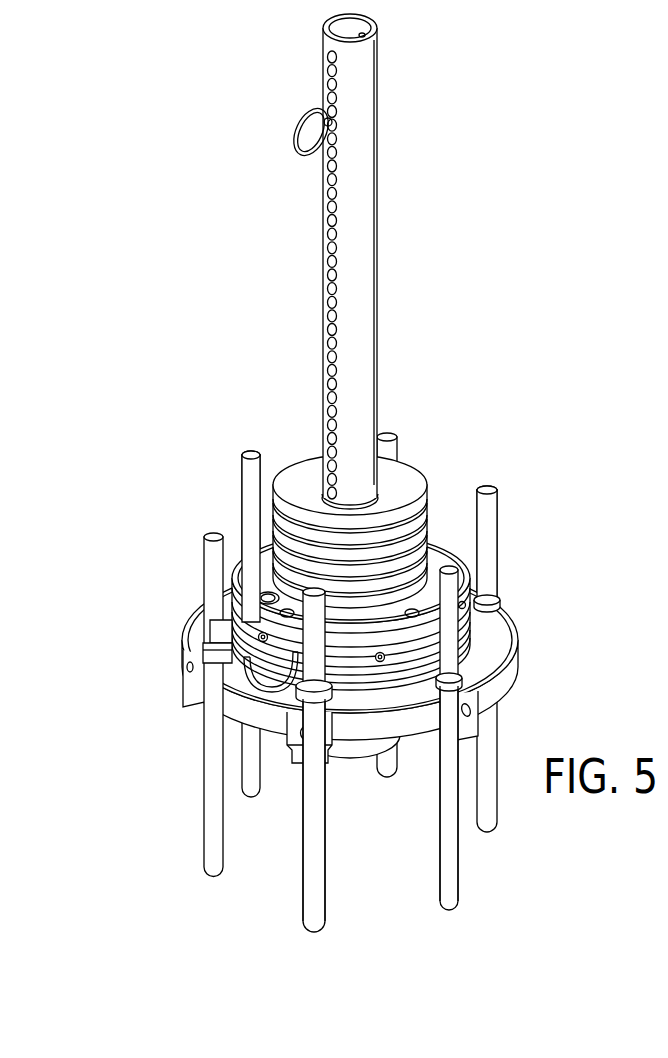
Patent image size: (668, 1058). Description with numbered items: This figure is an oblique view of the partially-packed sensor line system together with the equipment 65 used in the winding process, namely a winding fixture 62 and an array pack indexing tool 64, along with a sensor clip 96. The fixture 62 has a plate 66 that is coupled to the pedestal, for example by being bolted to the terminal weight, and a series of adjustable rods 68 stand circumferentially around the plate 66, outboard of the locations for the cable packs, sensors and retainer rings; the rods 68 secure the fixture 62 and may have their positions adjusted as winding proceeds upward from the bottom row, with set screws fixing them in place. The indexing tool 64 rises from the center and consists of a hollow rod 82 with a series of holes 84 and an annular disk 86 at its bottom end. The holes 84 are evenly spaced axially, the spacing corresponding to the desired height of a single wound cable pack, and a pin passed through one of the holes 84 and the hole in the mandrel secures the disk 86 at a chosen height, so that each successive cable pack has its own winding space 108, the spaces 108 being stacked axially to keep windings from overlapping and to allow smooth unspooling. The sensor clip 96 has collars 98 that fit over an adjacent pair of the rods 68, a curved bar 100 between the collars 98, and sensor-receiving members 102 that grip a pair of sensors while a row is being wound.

The winding fixture 62 is at (356, 665).
The array pack indexing tool 64 is at (350, 261).
The equipment 65 is at (361, 554).
The plate 66 is at (500, 620).
The adjustable rods 68 is at (497, 511).
The hollow rod 82 is at (362, 133).
The holes 84 is at (327, 302).
The annular disk 86 is at (410, 482).
The sensor clip 96 is at (178, 672).
The collars 98 is at (320, 698).
The curved bar 100 is at (235, 678).
The sensor-receiving members 102 is at (272, 680).
The winding spaces 108 is at (262, 541).